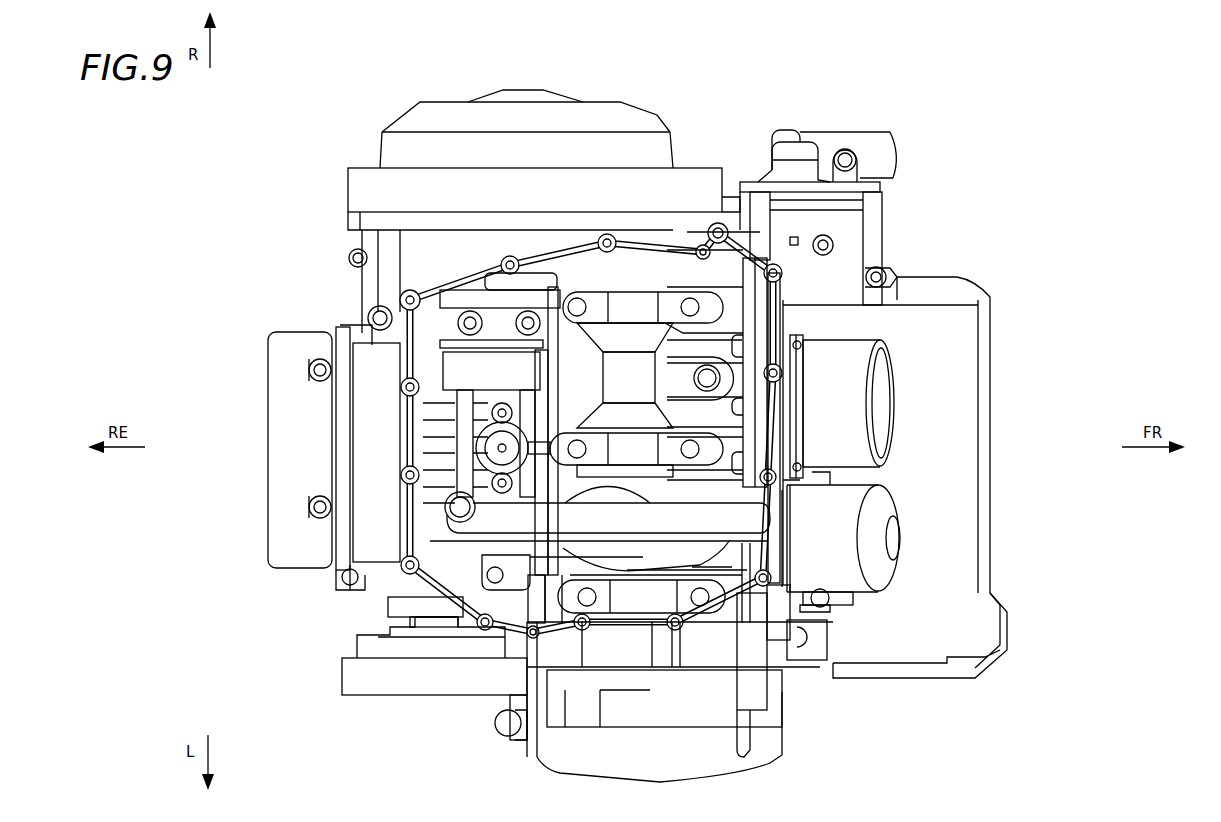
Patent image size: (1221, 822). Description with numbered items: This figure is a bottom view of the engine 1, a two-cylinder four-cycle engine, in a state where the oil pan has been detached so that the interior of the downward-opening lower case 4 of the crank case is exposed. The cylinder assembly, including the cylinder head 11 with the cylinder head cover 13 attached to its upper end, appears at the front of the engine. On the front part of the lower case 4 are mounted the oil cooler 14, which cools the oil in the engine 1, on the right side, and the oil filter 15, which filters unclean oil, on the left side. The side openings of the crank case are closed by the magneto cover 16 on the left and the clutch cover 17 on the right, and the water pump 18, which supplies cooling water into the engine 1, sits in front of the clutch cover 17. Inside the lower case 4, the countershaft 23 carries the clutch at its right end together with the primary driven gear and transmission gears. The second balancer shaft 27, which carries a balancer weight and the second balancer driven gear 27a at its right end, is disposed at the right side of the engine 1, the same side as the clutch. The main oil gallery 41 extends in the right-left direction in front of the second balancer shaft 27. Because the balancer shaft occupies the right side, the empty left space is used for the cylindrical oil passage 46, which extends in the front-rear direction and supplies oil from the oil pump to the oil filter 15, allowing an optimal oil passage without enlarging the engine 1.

The engine 1 is at (165, 151).
The lower case 4 is at (412, 243).
The cylinder head 11 is at (955, 288).
The cylinder head cover 13 is at (1000, 370).
The oil cooler 14 is at (887, 398).
The oil filter 15 is at (890, 507).
The magneto cover 16 is at (760, 760).
The clutch cover 17 is at (400, 140).
The water pump 18 is at (833, 140).
The countershaft 23 is at (545, 273).
The second balancer driven gear 27a is at (680, 270).
The second balancer shaft 27 is at (630, 375).
The main oil gallery 41 is at (755, 325).
The oil passage 46 is at (703, 517).